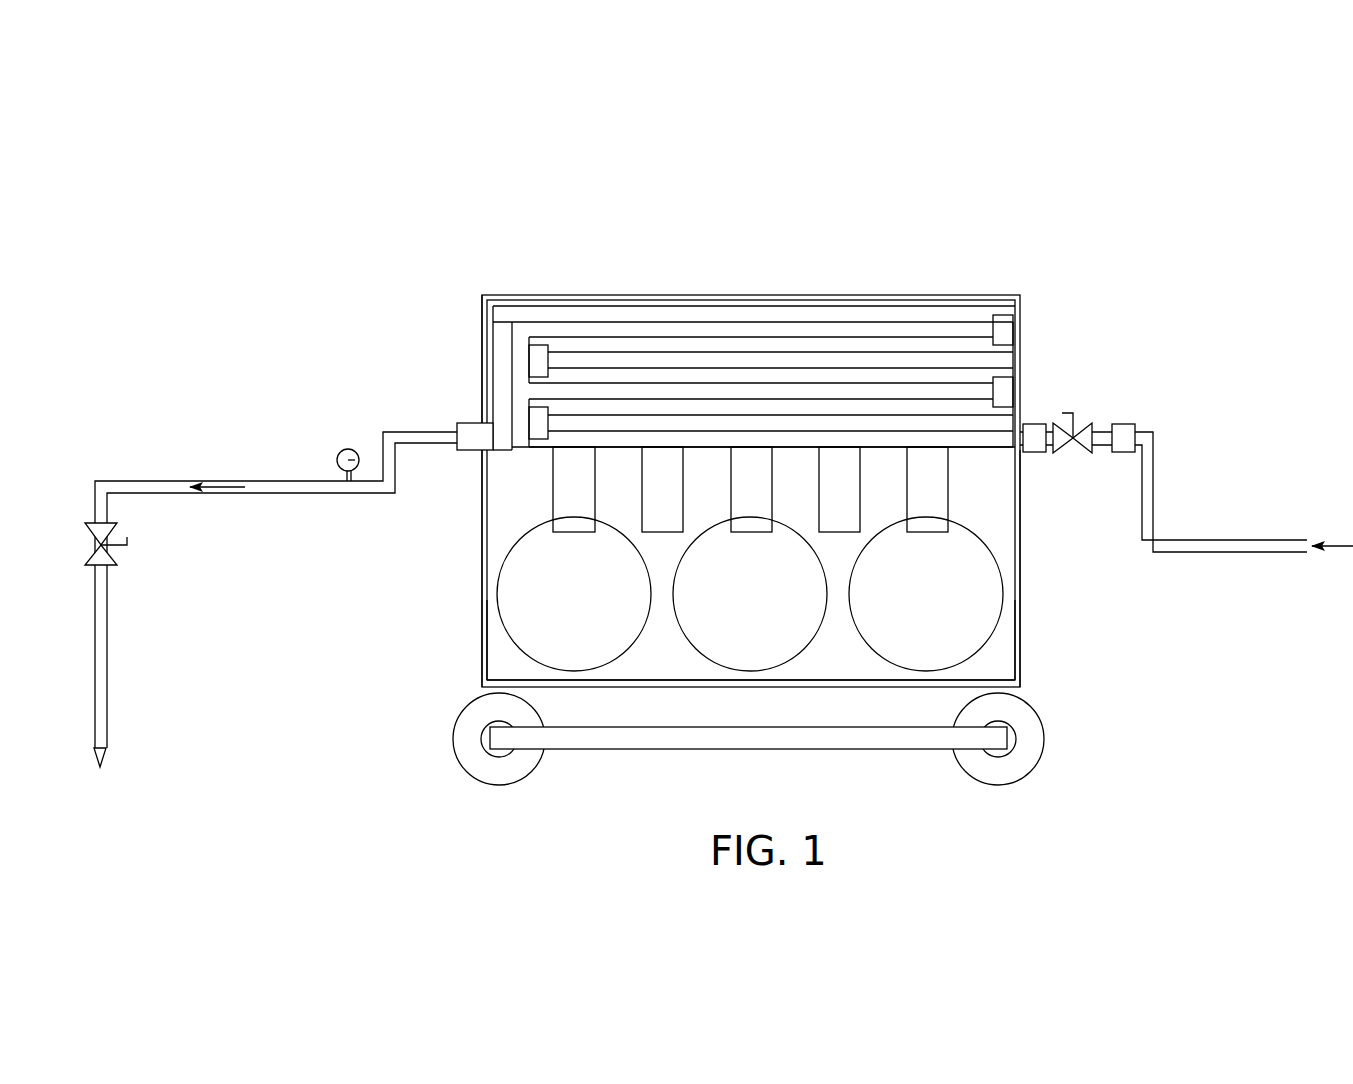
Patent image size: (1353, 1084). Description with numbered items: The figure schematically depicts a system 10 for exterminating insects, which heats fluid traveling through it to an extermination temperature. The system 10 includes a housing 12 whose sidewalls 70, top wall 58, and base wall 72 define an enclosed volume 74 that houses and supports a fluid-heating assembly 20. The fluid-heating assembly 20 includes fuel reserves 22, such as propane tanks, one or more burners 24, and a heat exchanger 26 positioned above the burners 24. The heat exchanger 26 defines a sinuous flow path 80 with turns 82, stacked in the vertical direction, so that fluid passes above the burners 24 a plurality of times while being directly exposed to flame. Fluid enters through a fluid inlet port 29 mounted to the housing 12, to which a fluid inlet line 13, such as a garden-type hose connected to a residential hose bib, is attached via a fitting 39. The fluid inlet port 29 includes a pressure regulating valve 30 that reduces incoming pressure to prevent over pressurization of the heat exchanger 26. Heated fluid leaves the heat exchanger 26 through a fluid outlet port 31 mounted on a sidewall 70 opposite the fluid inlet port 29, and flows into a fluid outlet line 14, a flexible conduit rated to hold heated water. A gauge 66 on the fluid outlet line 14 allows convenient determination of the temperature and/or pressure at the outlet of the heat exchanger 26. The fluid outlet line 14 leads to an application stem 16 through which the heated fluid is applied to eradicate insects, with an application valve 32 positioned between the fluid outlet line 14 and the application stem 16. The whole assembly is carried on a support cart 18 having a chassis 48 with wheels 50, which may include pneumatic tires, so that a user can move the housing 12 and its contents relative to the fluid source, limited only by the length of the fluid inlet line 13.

The system for exterminating insects 10 is at (1235, 188).
The housing 12 is at (1070, 283).
The fluid inlet line 13 is at (1230, 540).
The fluid outlet line 14 is at (240, 480).
The application stem 16 is at (127, 718).
The support cart 18 is at (527, 797).
The fluid-heating assembly 20 is at (470, 590).
The fuel reserves 22 is at (488, 658).
The burners 24 is at (503, 502).
The heat exchanger 26 is at (720, 272).
The fluid inlet port 29 is at (1138, 397).
The pressure regulating valve 30 is at (1080, 448).
The fluid outlet port 31 is at (437, 420).
The application valve 32 is at (95, 530).
The fitting 39 is at (1124, 424).
The chassis 48 is at (915, 785).
The wheels 50 is at (455, 760).
The top wall 58 is at (537, 295).
The gauge 66 is at (348, 449).
The sidewalls 70 is at (1022, 630).
The base wall 72 is at (1020, 685).
The enclosed volume 74 is at (1023, 529).
The sinuous flow path 80 is at (532, 452).
The turns 82 is at (529, 362).